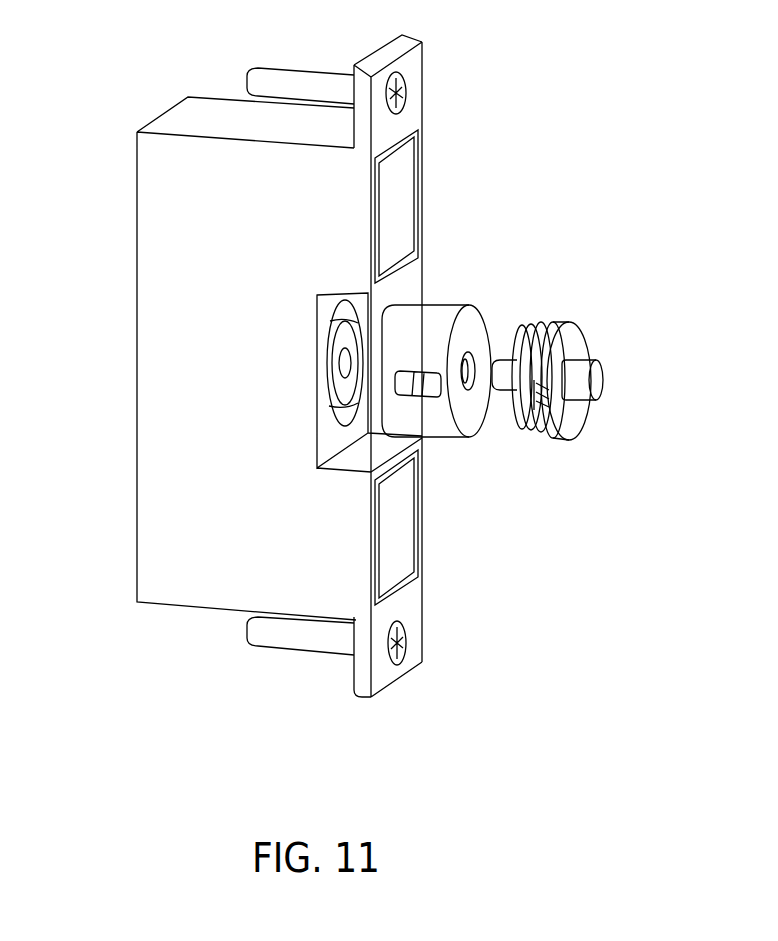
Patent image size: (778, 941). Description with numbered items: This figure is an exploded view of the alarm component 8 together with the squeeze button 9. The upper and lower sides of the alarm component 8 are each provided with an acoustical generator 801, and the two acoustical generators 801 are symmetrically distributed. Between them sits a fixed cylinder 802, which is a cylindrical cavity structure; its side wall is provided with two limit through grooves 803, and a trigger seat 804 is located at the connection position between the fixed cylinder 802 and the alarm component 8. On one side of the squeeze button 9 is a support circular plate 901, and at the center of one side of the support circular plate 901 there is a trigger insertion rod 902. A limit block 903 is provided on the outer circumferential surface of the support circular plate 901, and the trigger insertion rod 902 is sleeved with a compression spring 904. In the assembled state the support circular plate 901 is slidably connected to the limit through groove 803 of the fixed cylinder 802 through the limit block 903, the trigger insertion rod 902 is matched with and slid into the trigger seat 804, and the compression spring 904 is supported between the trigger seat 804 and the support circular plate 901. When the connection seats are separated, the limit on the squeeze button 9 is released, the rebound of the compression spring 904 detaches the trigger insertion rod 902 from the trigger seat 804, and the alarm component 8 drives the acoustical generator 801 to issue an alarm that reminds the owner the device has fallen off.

The alarm component 8 is at (170, 515).
The acoustical generator 801 is at (395, 197).
The fixed cylinder 802 is at (468, 310).
The limit through groove 803 is at (435, 398).
The trigger seat 804 is at (332, 347).
The squeeze button 9 is at (590, 362).
The support circular plate 901 is at (573, 432).
The trigger insertion rod 902 is at (550, 323).
The limit block 903 is at (543, 393).
The compression spring 904 is at (525, 428).